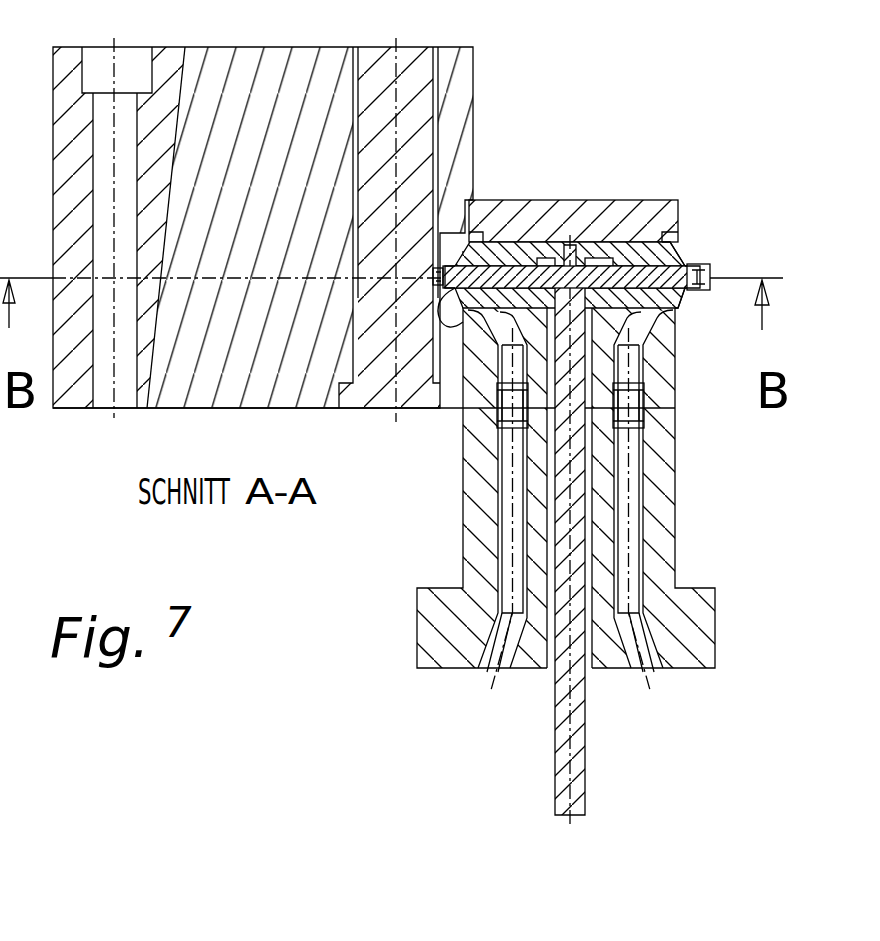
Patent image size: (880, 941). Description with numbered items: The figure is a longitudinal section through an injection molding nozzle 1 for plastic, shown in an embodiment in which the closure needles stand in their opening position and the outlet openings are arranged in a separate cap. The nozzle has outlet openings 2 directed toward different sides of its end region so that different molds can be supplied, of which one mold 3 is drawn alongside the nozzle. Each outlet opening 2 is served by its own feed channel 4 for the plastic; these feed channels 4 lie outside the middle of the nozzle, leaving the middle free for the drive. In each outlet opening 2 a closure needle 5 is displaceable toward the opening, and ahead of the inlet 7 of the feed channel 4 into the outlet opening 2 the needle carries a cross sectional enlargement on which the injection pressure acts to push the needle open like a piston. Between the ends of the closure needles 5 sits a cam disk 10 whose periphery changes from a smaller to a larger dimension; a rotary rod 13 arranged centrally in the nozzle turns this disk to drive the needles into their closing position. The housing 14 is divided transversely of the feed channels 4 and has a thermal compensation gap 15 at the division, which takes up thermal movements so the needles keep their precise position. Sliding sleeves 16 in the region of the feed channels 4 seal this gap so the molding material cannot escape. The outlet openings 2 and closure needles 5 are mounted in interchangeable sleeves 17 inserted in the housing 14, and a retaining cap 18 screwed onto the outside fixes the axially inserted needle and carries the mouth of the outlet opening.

The injection molding nozzle 1 is at (440, 524).
The outlet opening 2 is at (514, 228).
The mold 3 is at (455, 118).
The feed channel 4 is at (648, 572).
The closure needle 5 is at (645, 240).
The inlet 7 is at (458, 320).
The cam disk 10 is at (602, 233).
The rotary rod 13 is at (572, 707).
The housing 14 is at (660, 518).
The thermal compensation gap 15 is at (668, 402).
The sliding sleeve 16 is at (643, 412).
The interchangeable sleeve 17 is at (528, 232).
The retaining cap 18 is at (692, 247).